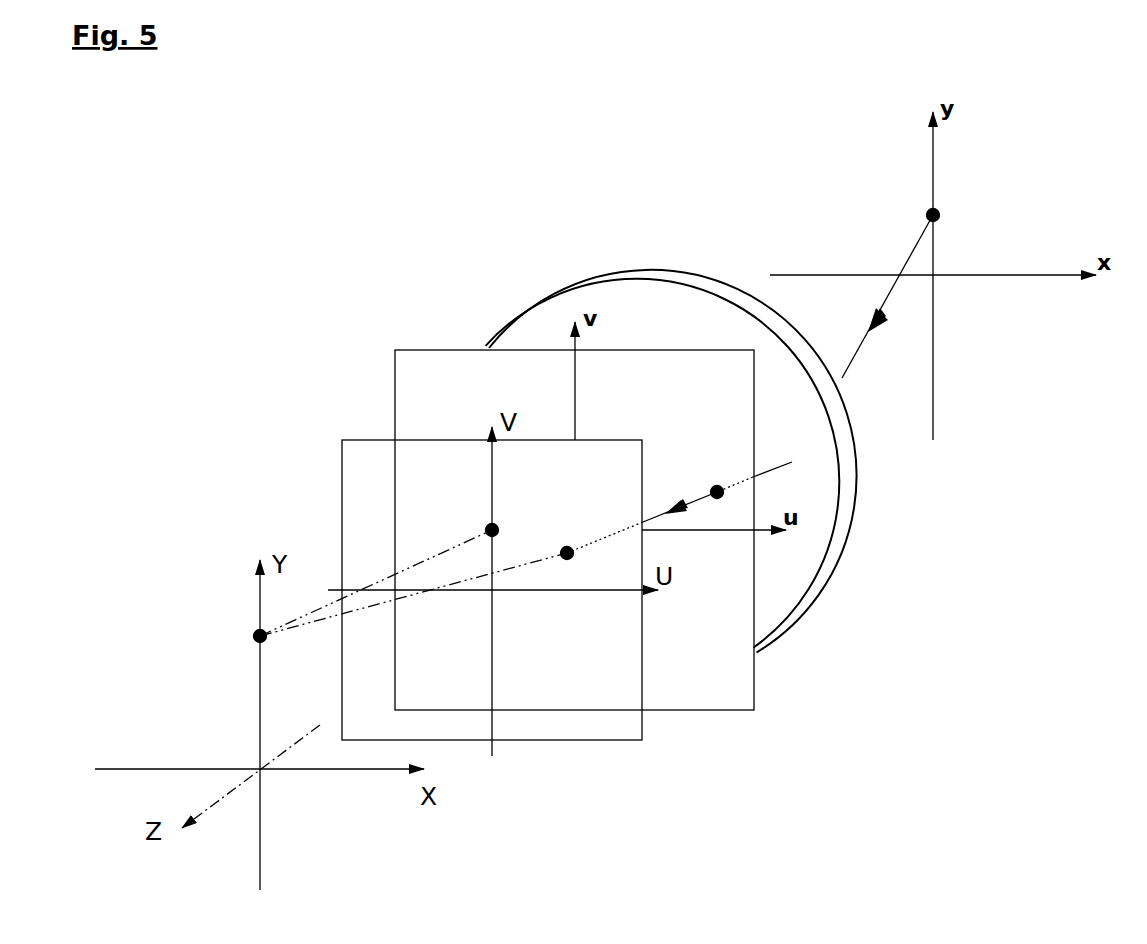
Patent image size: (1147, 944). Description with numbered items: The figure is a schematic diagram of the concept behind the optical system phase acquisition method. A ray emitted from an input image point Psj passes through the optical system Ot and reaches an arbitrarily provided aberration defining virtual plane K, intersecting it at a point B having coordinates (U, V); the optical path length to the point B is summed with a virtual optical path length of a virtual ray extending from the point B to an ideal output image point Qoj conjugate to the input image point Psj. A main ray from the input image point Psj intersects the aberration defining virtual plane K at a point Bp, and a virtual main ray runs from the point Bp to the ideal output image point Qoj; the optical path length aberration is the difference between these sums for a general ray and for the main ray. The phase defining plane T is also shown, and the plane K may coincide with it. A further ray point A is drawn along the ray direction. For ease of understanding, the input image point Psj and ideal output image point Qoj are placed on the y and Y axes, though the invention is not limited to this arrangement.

The phase defining plane T is at (410, 367).
The aberration defining virtual plane K is at (357, 455).
The tool optical surface Ot is at (627, 273).
The point Bp is at (488, 530).
The point B is at (562, 552).
The point A is at (711, 492).
The ideal output image point Qoj is at (256, 634).
The input image point Psj is at (940, 215).